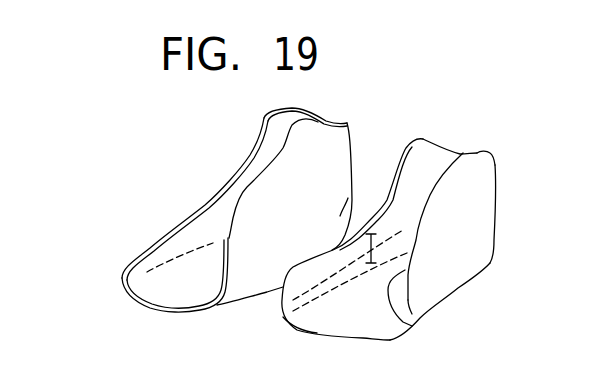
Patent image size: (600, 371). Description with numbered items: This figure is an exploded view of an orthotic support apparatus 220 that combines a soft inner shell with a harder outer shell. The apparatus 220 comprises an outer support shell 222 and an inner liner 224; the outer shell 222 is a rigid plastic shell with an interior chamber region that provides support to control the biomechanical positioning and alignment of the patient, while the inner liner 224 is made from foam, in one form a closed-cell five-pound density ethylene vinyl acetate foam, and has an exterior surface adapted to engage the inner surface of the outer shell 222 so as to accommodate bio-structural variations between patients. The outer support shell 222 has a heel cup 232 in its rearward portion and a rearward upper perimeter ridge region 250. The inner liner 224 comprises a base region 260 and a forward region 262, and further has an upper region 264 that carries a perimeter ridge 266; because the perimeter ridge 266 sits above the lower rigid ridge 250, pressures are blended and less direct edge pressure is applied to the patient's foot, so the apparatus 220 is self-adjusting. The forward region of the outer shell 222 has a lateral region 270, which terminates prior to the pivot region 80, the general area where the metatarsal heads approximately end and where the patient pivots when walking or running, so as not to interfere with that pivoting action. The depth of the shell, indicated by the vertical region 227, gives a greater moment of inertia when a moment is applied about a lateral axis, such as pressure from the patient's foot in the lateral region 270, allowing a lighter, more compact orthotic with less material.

The apparatus 220 is at (458, 110).
The outer support shell 222 is at (483, 207).
The inner liner 224 is at (329, 140).
The vertical region 227 is at (412, 314).
The heel cup 232 is at (480, 253).
The rearward upper perimeter ridge region 250 is at (480, 156).
The base region 260 is at (304, 230).
The forward region 262 is at (137, 288).
The upper region 264 is at (257, 150).
The perimeter ridge 266 is at (265, 117).
The lateral region 270 is at (417, 308).
The pivot region 80 is at (317, 323).